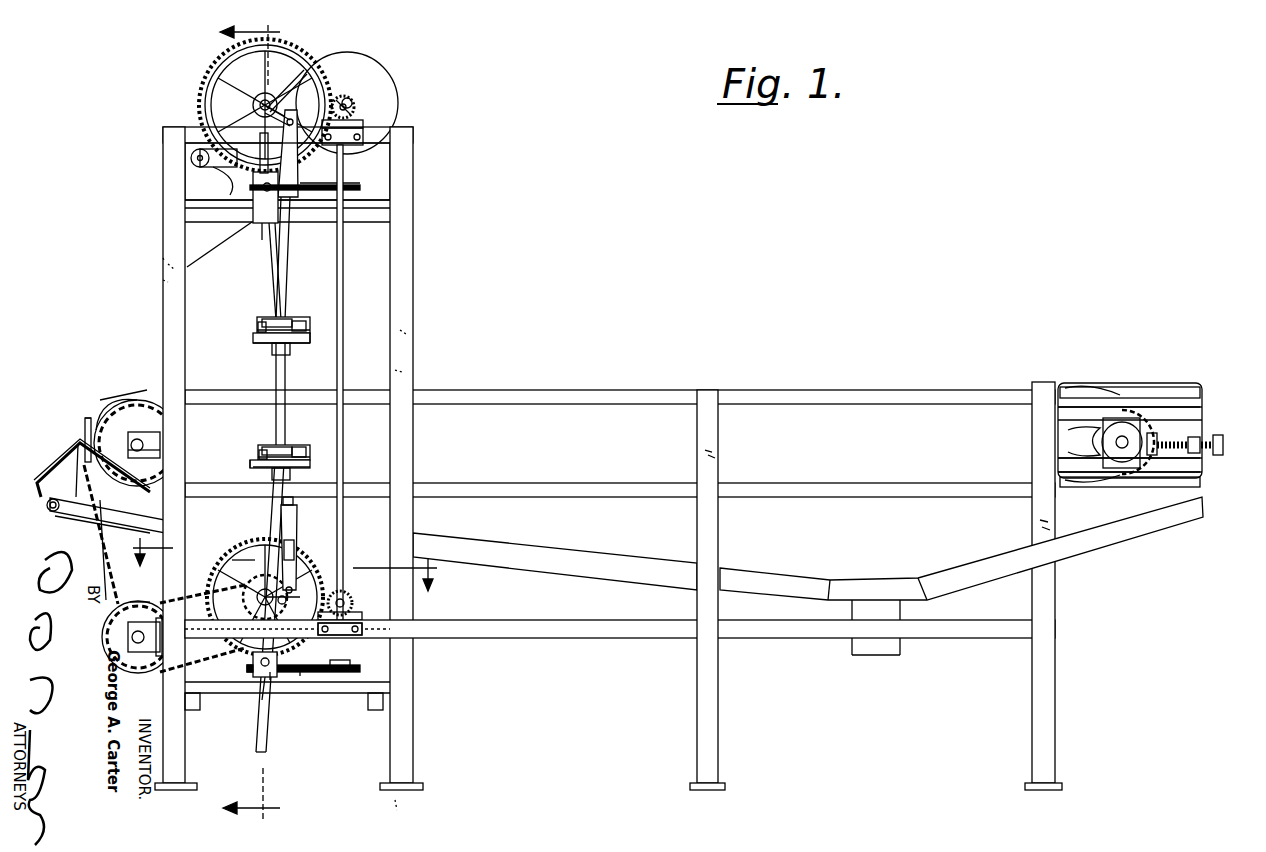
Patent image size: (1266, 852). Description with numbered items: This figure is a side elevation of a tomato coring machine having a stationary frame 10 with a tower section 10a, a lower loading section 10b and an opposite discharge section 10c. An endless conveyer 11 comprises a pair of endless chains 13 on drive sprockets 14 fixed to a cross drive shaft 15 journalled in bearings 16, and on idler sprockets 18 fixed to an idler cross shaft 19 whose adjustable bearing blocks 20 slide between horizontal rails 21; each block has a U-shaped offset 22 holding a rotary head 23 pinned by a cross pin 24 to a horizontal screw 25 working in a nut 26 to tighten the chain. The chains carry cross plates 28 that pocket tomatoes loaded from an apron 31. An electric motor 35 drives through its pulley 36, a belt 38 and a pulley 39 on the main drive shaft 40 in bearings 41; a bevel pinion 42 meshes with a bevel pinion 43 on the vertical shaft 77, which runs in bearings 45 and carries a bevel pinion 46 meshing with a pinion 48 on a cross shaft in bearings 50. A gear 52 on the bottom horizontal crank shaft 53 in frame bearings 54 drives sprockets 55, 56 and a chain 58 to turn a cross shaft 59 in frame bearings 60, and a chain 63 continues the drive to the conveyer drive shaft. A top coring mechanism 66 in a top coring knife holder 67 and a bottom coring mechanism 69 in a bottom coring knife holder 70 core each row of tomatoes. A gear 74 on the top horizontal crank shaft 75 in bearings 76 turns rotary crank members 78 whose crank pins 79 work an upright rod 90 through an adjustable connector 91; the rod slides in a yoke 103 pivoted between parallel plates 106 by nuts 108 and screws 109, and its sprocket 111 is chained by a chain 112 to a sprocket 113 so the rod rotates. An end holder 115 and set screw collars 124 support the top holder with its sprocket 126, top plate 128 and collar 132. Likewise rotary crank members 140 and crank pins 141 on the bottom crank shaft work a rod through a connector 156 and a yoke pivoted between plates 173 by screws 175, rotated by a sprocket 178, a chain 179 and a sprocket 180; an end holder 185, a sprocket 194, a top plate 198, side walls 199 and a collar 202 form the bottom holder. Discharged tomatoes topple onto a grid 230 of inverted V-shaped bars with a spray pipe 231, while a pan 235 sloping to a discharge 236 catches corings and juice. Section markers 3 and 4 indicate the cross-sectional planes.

The stationary frame 10 is at (656, 376).
The tower section 10a is at (418, 135).
The lower loading section 10b is at (885, 388).
The discharge section 10c is at (50, 520).
The endless conveyer 11 is at (153, 388).
The endless chains 13 is at (121, 416).
The drive sprockets 14 is at (123, 403).
The cross drive shaft 15 is at (137, 439).
The bearings 16 is at (134, 452).
The idler sprockets 18 is at (1116, 443).
The idler cross shaft 19 is at (1066, 432).
The adjustable bearing blocks 20 is at (1060, 458).
The horizontal rails 21 is at (1200, 395).
The U-shaped offset 22 is at (1152, 432).
The rotary head 23 is at (1062, 408).
The cross pin 24 is at (1062, 472).
The horizontal screw 25 is at (1218, 435).
The nut 26 is at (1200, 452).
The cross plates 28 is at (100, 400).
The apron 31 is at (1108, 384).
The electric motor 35 is at (190, 128).
The pulley 36 is at (191, 156).
The belt 38 is at (214, 181).
The pulley 39 is at (368, 68).
The main drive shaft 40 is at (346, 100).
The bearings 41 is at (364, 125).
The bevel pinion 42 is at (342, 97).
The bevel pinion 43 is at (362, 122).
The bearings 45 is at (343, 640).
The bevel pinion 46 is at (346, 595).
The pinion 48 is at (350, 602).
The bearings 50 is at (362, 616).
The gear 52 is at (240, 560).
The bottom horizontal crank shaft 53 is at (258, 612).
The frame bearings 54 is at (262, 585).
The sprocket 55 is at (244, 600).
The sprocket 56 is at (138, 672).
The chain 58 is at (202, 663).
The horizontal cross shaft 59 is at (145, 638).
The frame bearings 60 is at (137, 622).
The chain 63 is at (98, 530).
The top coring mechanism 66 is at (273, 327).
The top coring knife holder 67 is at (308, 345).
The bottom coring mechanism 69 is at (299, 427).
The bottom coring knife holder 70 is at (252, 468).
The gear 74 is at (261, 105).
The top horizontal crank shaft 75 is at (252, 105).
The bearings 76 is at (212, 50).
The vertical shaft 77 is at (344, 291).
The rotary crank members 78 is at (289, 91).
The horizontal crank pin 79 is at (296, 120).
The upright rod 90 is at (287, 257).
The connector 91 is at (290, 205).
The inverted U-shaped yoke 103 is at (287, 630).
The spaced parallel plates 106 is at (262, 668).
The coaxial nuts 108 is at (260, 695).
The screw 109 is at (272, 680).
The sprocket 111 is at (247, 668).
The chain 112 is at (302, 675).
The sprocket 113 is at (360, 668).
The end supporting plate 115 is at (255, 342).
The set screw collars 124 is at (274, 348).
The sprocket 126 is at (258, 324).
The top plate 128 is at (288, 318).
The guide 132 is at (257, 331).
The rotary crank members 140 is at (295, 597).
The horizontal crank pin 141 is at (300, 606).
The connector 156 is at (297, 522).
The spaced parallel plates 173 is at (262, 225).
The screw 175 is at (268, 178).
The sprocket 178 is at (250, 188).
The chain 179 is at (330, 173).
The sprocket 180 is at (362, 188).
The end supporting plate 185 is at (255, 462).
The sprocket 194 is at (306, 452).
The top plate 198 is at (262, 445).
The side walls 199 is at (258, 452).
The guide 202 is at (310, 458).
The grid 230 is at (48, 458).
The spray pipe 231 is at (46, 505).
The pan 235 is at (766, 576).
The discharge 236 is at (868, 645).
The section line 3- 3 is at (285, 561).
The section line 4- 4 is at (256, 423).